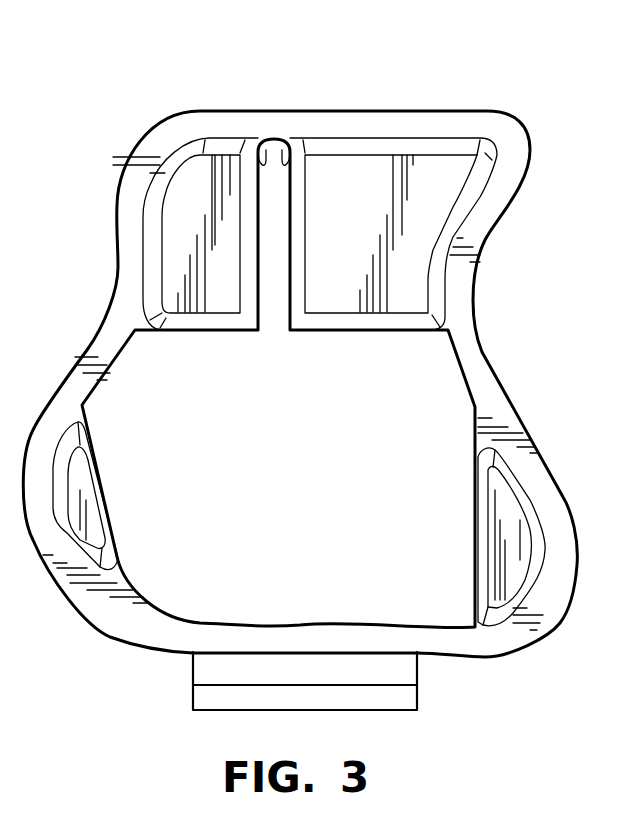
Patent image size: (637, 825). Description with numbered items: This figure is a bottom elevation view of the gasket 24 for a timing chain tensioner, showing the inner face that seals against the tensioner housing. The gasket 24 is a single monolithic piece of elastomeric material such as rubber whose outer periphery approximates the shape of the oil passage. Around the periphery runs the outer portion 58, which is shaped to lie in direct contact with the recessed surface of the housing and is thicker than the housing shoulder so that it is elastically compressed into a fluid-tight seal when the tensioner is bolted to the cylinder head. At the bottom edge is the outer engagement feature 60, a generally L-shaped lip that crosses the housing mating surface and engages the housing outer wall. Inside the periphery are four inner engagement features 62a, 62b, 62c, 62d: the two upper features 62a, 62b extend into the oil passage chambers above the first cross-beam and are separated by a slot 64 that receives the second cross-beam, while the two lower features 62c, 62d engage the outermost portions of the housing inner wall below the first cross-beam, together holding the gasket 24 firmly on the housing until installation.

The gasket 24 is at (113, 666).
The outer portion 58 is at (470, 368).
The outer engagement feature 60 is at (407, 695).
The inner engagement feature 62a is at (197, 185).
The inner engagement feature 62b is at (367, 173).
The inner engagement feature 62c is at (92, 527).
The inner engagement feature 62d is at (517, 572).
The slot 64 is at (279, 139).